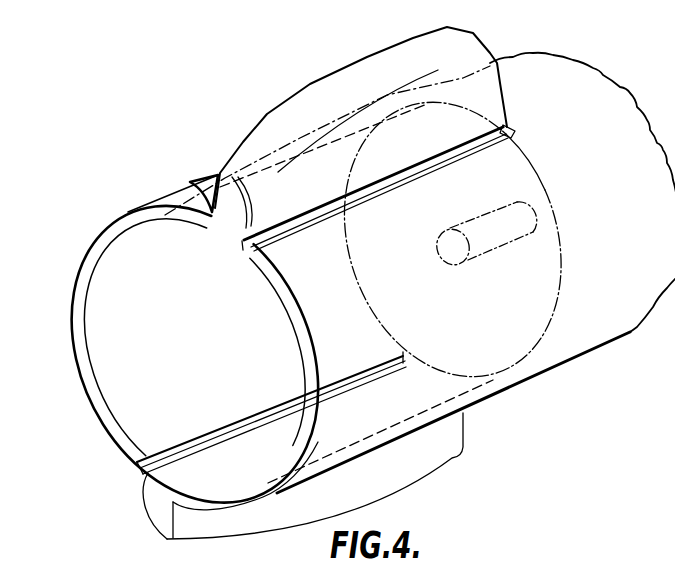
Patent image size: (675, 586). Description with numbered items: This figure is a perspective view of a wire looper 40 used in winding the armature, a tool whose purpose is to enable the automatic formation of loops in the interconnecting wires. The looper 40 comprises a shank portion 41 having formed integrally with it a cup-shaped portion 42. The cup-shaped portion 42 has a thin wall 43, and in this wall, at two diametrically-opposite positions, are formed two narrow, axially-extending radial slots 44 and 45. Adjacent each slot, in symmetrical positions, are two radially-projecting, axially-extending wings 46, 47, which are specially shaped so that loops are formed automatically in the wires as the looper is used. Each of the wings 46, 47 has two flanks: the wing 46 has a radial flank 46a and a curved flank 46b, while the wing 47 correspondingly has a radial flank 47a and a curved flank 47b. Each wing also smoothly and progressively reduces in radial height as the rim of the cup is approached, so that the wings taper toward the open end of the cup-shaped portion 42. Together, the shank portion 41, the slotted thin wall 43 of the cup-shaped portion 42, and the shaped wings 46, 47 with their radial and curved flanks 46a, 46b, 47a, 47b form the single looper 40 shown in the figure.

The wire looper 40 is at (120, 203).
The shank portion 41 is at (540, 75).
The cup-shaped portion 42 is at (458, 388).
The thin wall 43 is at (77, 353).
The radial slot 44 is at (247, 247).
The radial slot 45 is at (143, 475).
The wing 46 is at (272, 122).
The radial flank 46a is at (218, 176).
The curved flank 46b is at (235, 198).
The wing 47 is at (262, 522).
The radial flank 47a is at (183, 522).
The curved flank 47b is at (142, 493).